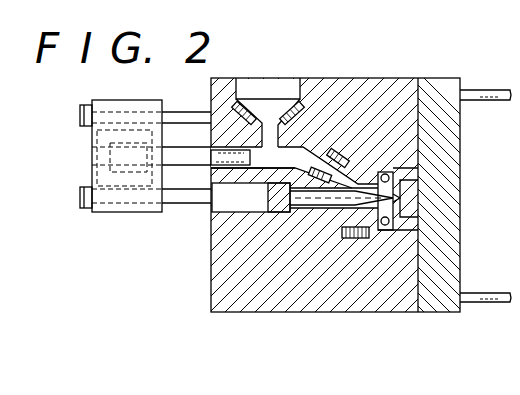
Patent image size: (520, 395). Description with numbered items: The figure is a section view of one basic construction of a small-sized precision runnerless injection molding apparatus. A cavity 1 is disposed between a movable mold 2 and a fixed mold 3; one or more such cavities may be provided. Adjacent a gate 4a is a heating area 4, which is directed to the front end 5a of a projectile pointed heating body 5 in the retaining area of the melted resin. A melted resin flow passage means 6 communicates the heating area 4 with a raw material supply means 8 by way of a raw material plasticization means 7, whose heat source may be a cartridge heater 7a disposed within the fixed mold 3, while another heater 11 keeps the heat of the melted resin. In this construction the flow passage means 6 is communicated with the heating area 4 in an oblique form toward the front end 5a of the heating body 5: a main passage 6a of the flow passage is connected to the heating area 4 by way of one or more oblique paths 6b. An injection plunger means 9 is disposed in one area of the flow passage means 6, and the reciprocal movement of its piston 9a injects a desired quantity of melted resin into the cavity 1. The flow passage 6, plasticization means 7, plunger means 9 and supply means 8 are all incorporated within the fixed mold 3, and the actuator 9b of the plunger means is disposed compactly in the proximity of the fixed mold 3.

The cavity 1 is at (399, 211).
The movable mold 2 is at (452, 130).
The fixed mold 3 is at (392, 290).
The heating area 4 is at (377, 232).
The gate 4a is at (402, 194).
The projectile pointed heating body 5 is at (322, 209).
The front end of the heating body 5a is at (385, 165).
The melted resin flow passage means 6 is at (228, 236).
The main passage 6a is at (270, 213).
The oblique path 6b is at (290, 212).
The raw material plasticization means 7 is at (268, 145).
The cartridge heater 7a is at (341, 155).
The raw material supply means 8 is at (256, 95).
The injection plunger means 9 is at (185, 250).
The piston 9a is at (207, 160).
The actuator 9b is at (132, 185).
The heater 11 is at (367, 172).